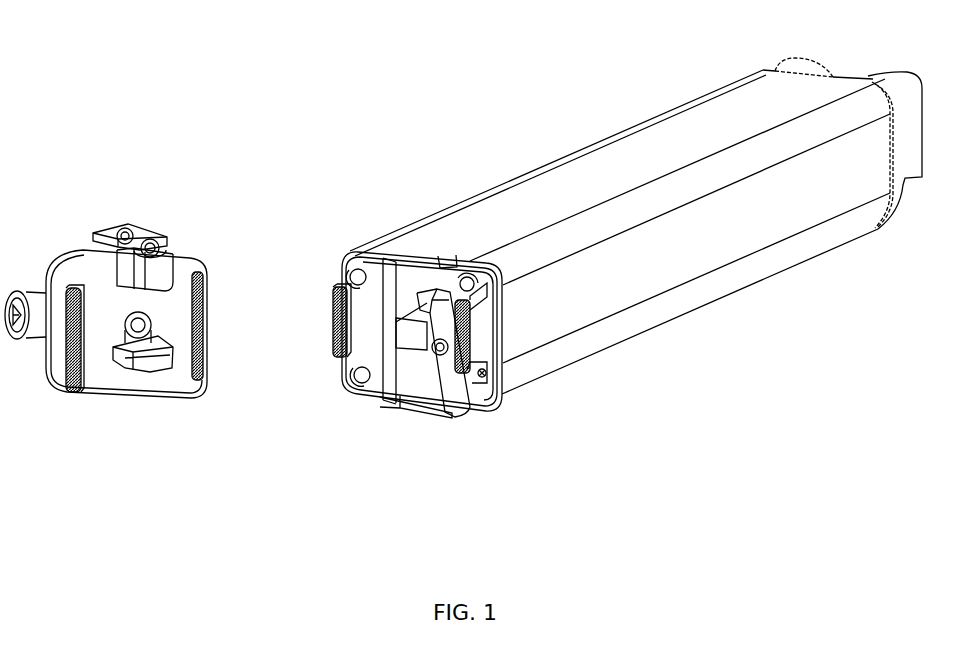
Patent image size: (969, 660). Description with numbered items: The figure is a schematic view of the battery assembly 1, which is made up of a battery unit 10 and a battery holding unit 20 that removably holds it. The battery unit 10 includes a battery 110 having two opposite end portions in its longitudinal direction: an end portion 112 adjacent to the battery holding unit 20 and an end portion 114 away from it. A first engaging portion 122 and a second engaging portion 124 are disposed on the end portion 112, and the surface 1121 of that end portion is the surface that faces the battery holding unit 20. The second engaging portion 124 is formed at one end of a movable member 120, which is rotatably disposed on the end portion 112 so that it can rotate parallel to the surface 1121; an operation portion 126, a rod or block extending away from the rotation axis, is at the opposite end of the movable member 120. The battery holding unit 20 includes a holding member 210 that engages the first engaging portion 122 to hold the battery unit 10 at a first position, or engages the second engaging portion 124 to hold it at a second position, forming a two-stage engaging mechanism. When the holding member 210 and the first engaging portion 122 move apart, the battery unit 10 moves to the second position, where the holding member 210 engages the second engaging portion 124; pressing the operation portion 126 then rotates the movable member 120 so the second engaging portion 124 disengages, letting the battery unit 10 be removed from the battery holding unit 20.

The battery assembly 1 is at (151, 30).
The battery unit 10 is at (553, 101).
The battery holding unit 20 is at (89, 205).
The battery 110 is at (632, 297).
The end portion 112 is at (372, 253).
The end portion 114 is at (798, 67).
The movable member 120 is at (413, 333).
The first engaging portion 122 is at (384, 392).
The second engaging portion 124 is at (420, 305).
The operation portion 126 is at (475, 385).
The surface 1121 is at (452, 257).
The holding member 210 is at (152, 364).